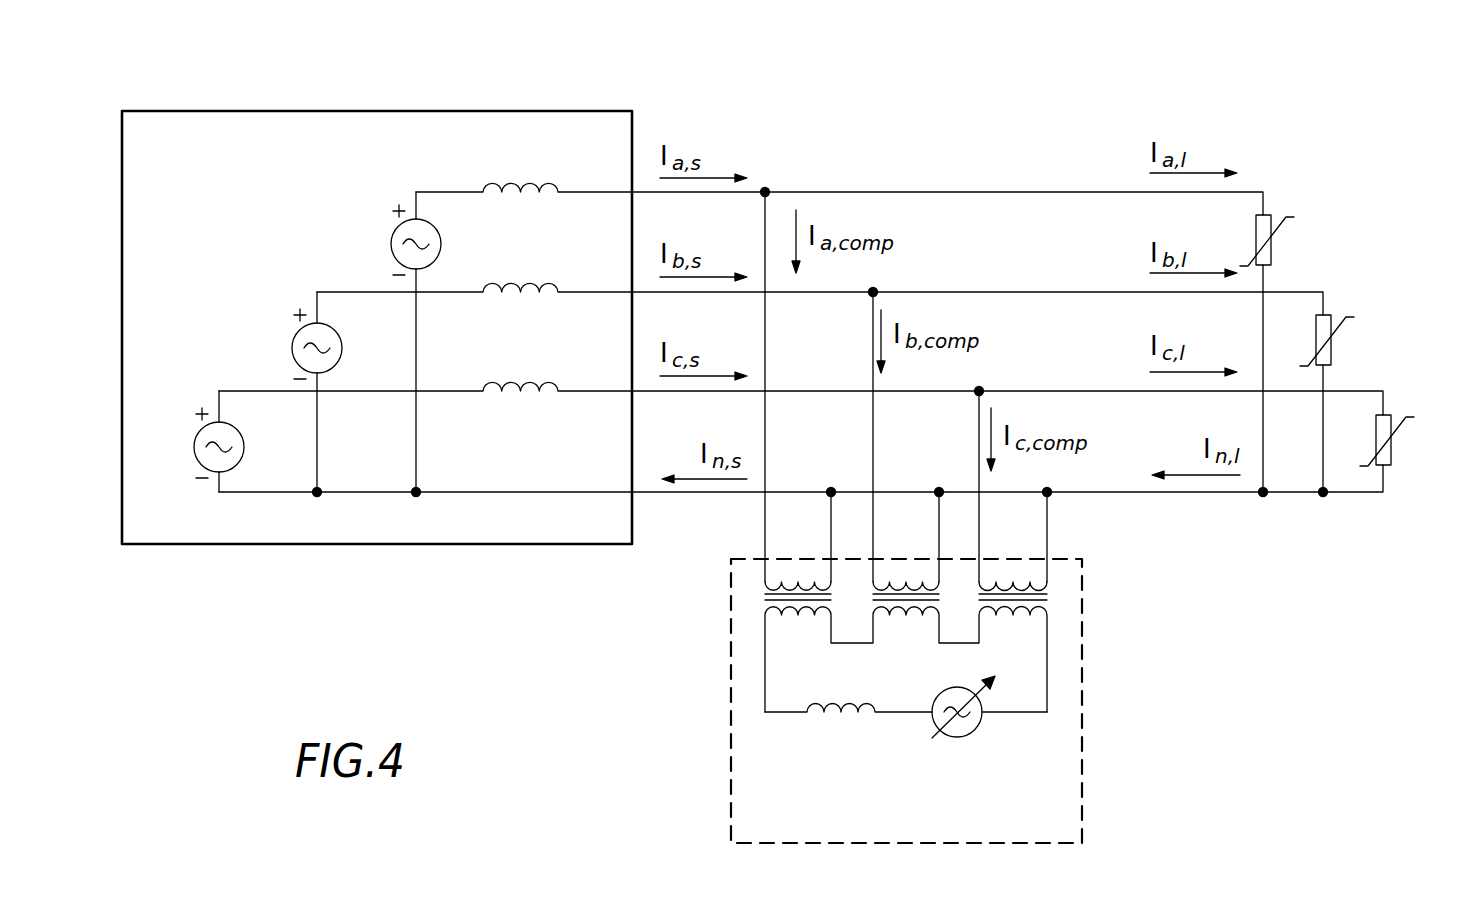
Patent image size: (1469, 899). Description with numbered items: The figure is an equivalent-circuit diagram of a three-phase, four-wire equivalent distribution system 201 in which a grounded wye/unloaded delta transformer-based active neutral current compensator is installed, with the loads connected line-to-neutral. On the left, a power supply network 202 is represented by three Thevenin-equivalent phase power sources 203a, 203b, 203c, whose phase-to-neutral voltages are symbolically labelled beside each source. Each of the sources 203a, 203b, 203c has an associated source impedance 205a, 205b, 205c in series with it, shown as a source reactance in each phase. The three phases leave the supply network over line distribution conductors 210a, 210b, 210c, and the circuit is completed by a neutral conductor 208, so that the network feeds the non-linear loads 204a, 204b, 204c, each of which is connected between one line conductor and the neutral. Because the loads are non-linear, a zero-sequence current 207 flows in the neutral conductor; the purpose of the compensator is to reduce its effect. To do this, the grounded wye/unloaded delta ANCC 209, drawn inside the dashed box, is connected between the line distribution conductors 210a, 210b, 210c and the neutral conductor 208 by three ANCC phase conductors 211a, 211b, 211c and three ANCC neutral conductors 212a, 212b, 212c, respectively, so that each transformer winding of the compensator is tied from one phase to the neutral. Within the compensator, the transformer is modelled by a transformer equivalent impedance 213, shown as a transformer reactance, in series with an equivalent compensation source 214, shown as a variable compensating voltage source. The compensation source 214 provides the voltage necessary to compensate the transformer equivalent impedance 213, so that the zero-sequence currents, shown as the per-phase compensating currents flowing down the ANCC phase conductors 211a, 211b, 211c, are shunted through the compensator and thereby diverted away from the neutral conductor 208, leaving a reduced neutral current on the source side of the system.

The equivalent distribution system 201 is at (228, 90).
The power supply network 202 is at (563, 545).
The phase power source 203a is at (441, 238).
The phase power source 203b is at (342, 357).
The phase power source 203c is at (244, 461).
The source impedance 205a is at (557, 189).
The source impedance 205b is at (558, 289).
The source impedance 205c is at (558, 388).
The zero-sequence current 207 is at (693, 479).
The neutral conductor 208 is at (1188, 493).
The grounded wye/unloaded delta ANCC 209 is at (1083, 663).
The line distribution conductor 210a is at (1078, 190).
The line distribution conductor 210b is at (1078, 290).
The line distribution conductor 210c is at (1081, 388).
The non-linear load 204a is at (1272, 253).
The non-linear load 204b is at (1332, 353).
The non-linear load 204c is at (1392, 453).
The ANCC phase conductor 211a is at (764, 418).
The ANCC phase conductor 211b is at (872, 418).
The ANCC phase conductor 211c is at (978, 418).
The ANCC neutral conductor 212a is at (830, 523).
The ANCC neutral conductor 212b is at (938, 523).
The ANCC neutral conductor 212c is at (1048, 528).
The transformer equivalent impedance 213 is at (836, 704).
The equivalent compensation source 214 is at (970, 737).